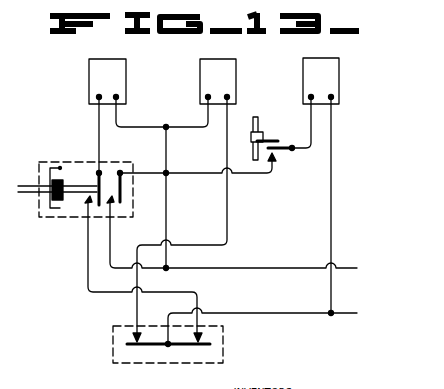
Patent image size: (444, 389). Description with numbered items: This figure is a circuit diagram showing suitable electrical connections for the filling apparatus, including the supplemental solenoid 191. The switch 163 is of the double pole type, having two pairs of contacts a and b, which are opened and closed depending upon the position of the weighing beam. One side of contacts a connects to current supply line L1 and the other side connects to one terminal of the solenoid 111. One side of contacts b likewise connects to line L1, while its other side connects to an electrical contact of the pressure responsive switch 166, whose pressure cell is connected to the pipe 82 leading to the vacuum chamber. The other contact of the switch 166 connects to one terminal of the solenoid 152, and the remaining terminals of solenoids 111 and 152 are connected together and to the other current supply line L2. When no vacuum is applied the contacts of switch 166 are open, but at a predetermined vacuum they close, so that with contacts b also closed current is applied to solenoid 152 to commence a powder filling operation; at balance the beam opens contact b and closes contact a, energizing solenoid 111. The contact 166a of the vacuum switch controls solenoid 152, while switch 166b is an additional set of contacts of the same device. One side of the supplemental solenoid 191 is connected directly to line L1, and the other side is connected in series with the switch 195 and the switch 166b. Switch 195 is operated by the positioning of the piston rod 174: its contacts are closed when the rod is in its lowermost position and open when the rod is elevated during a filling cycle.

The solenoid 152 is at (92, 79).
The solenoid 111 is at (201, 78).
The supplemental solenoid 191 is at (303, 77).
The piston rod 174 is at (259, 125).
The switch 195 is at (278, 158).
The pressure responsive switch 166 is at (98, 187).
The contact 166a is at (105, 170).
The switch 166b is at (125, 205).
The pipe 82 is at (27, 185).
The switch 163 is at (118, 326).
The contacts a is at (125, 339).
The contacts b is at (212, 339).
The current supply line L1 is at (357, 303).
The current supply line L2 is at (357, 260).